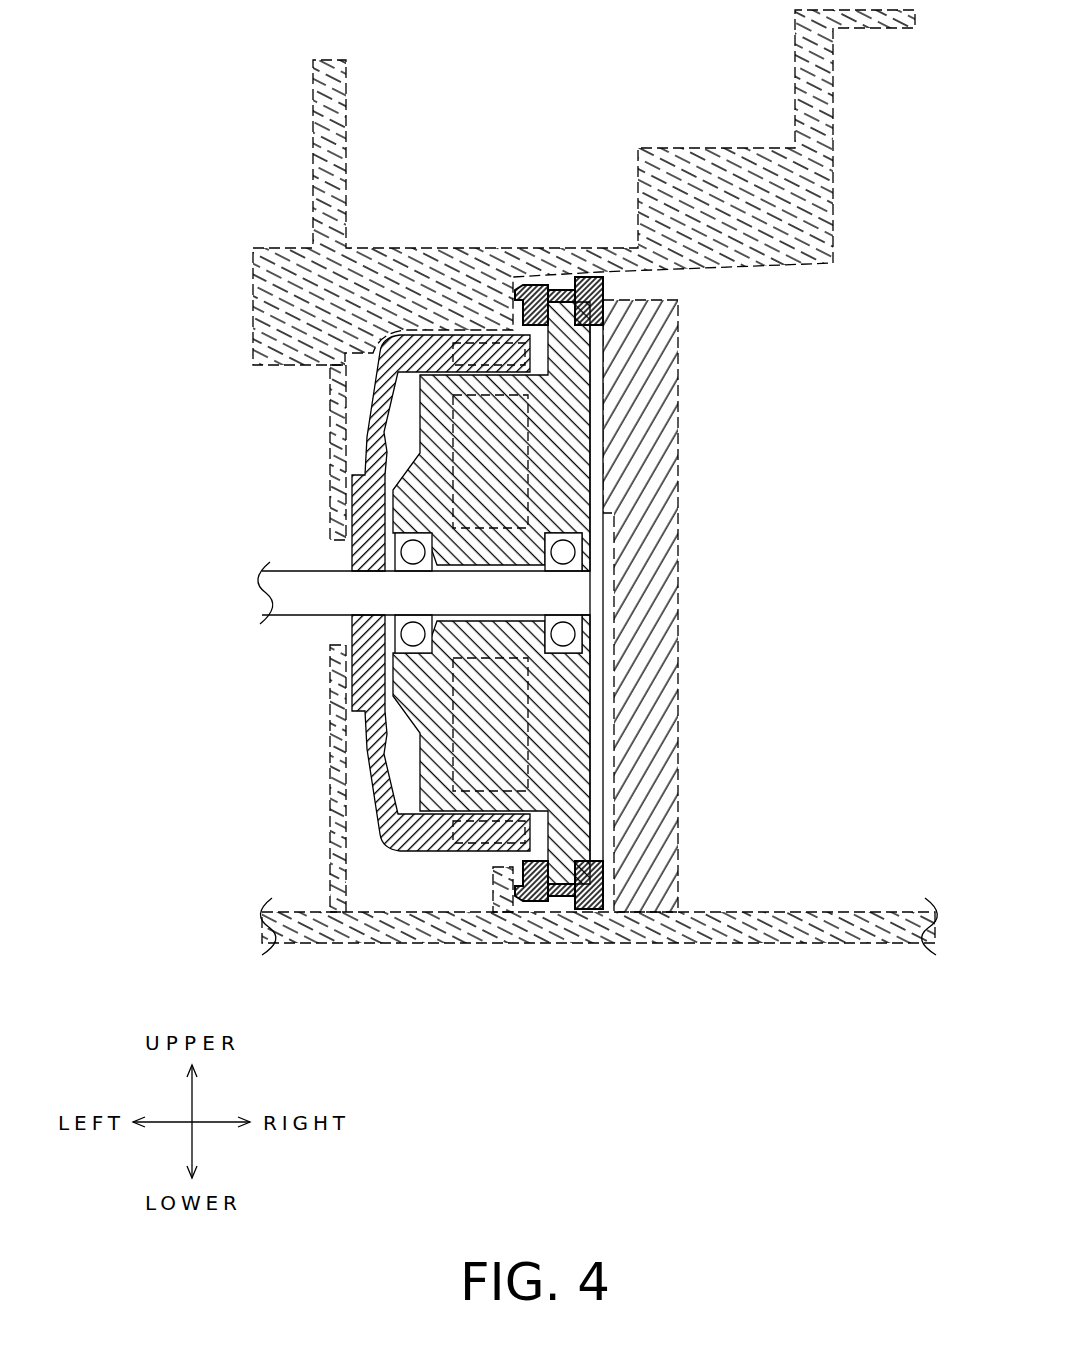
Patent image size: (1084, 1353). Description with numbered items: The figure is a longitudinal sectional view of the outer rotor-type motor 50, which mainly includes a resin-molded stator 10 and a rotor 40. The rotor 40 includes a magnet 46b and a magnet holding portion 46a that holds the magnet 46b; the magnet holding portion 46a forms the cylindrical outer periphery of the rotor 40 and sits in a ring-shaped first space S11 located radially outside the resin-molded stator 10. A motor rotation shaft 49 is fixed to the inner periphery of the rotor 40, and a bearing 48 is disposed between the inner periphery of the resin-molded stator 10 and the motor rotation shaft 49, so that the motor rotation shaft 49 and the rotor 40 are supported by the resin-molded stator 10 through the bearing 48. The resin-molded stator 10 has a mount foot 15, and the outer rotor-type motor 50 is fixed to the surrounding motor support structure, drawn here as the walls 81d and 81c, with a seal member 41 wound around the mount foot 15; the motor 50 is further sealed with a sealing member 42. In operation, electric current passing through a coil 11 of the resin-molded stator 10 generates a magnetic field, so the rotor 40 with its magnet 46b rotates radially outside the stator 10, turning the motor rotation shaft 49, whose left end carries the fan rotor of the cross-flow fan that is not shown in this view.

The resin-molded stator 10 is at (497, 593).
The coil 11 is at (493, 447).
The mount foot 15 is at (573, 348).
The rotor 40 is at (356, 446).
The seal member 41 is at (538, 282).
The sealing member 42 is at (681, 680).
The magnet holding portion 46a is at (440, 335).
The magnet 46b is at (575, 425).
The bearing 48 is at (575, 552).
The motor rotation shaft 49 is at (290, 582).
The outer rotor-type motor 50 is at (345, 631).
The base wall 81c is at (592, 945).
The upper wall 81d is at (723, 146).
The first space S11 is at (556, 300).